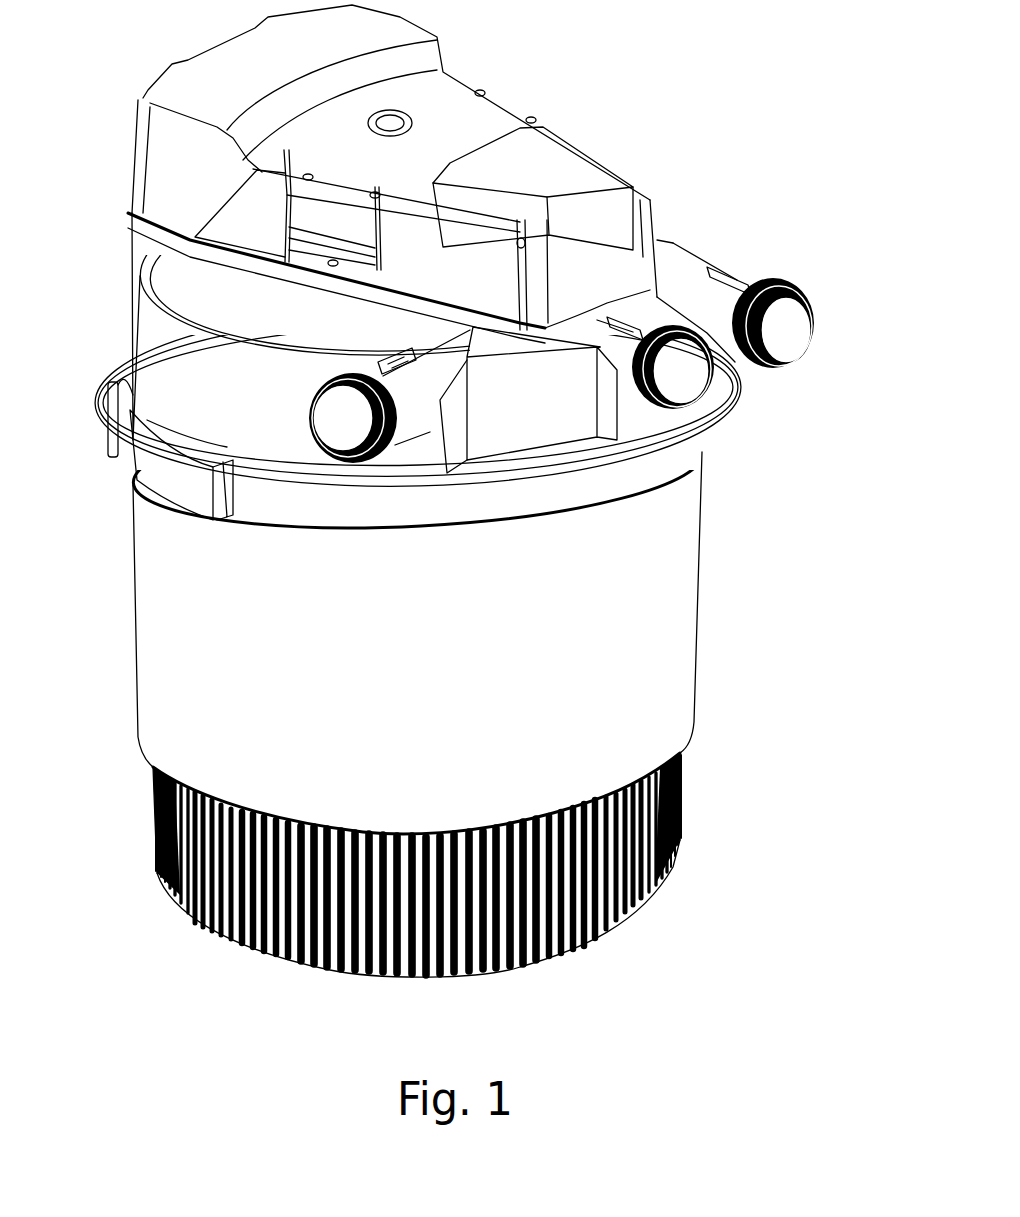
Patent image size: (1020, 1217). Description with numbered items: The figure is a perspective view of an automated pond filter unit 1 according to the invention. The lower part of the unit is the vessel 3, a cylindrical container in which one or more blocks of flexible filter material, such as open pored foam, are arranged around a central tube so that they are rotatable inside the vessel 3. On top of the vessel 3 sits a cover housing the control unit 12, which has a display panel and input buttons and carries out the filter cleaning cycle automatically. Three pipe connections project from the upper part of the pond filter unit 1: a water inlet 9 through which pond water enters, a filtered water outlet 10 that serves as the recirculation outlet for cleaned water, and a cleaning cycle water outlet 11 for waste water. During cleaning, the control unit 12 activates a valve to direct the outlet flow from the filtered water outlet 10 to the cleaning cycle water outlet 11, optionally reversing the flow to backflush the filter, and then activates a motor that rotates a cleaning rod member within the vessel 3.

The pond filter unit 1 is at (462, 491).
The vessel 3 is at (417, 686).
The water inlet 9 is at (818, 348).
The filtered water outlet 10 is at (685, 380).
The cleaning cycle water outlet 11 is at (282, 453).
The control unit 12 is at (122, 146).